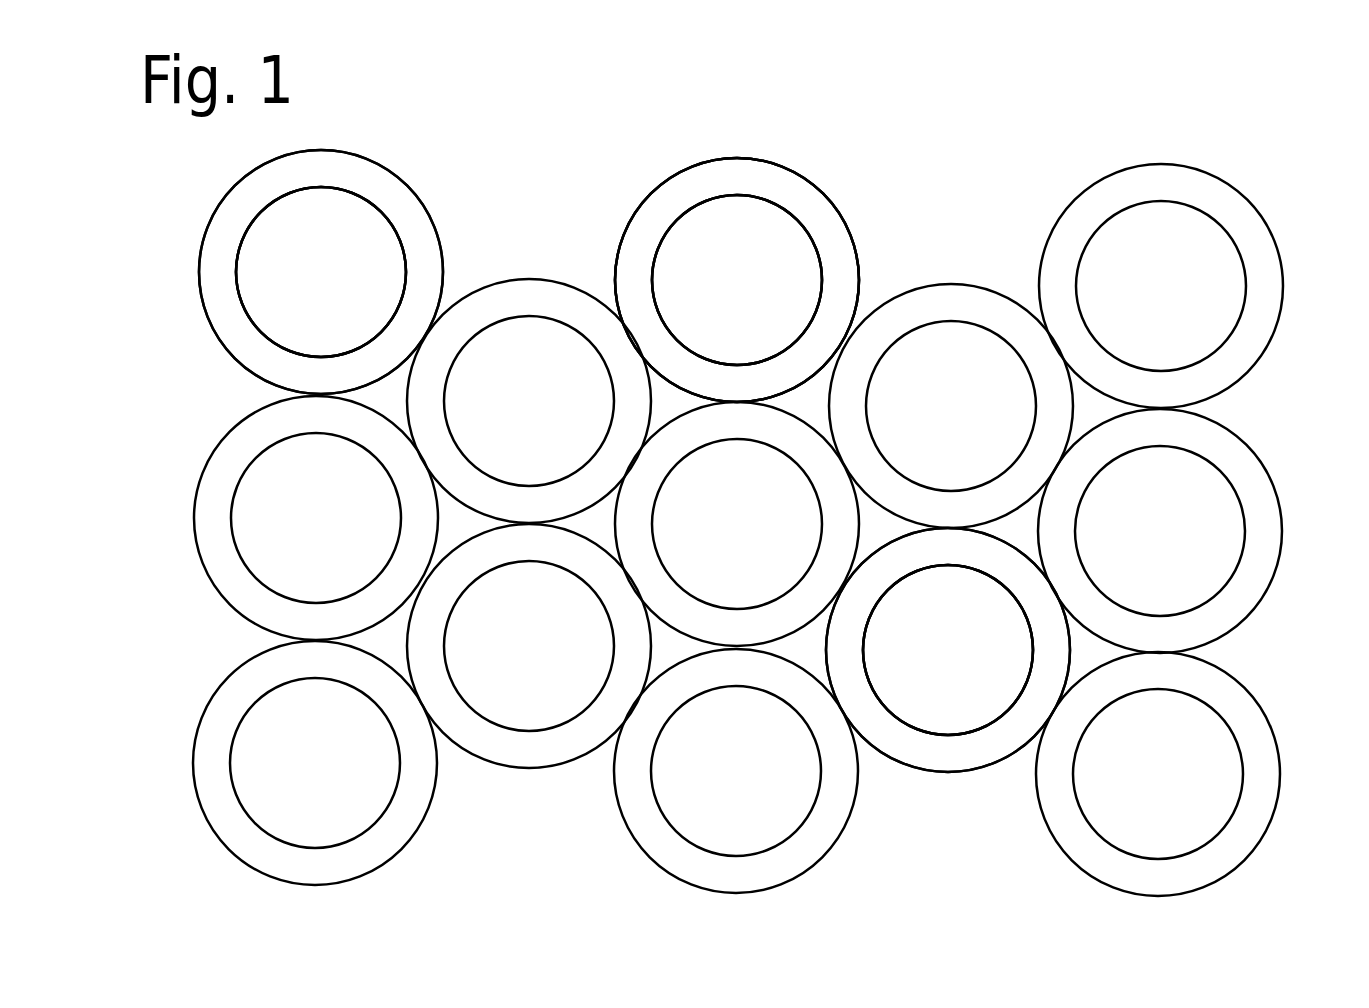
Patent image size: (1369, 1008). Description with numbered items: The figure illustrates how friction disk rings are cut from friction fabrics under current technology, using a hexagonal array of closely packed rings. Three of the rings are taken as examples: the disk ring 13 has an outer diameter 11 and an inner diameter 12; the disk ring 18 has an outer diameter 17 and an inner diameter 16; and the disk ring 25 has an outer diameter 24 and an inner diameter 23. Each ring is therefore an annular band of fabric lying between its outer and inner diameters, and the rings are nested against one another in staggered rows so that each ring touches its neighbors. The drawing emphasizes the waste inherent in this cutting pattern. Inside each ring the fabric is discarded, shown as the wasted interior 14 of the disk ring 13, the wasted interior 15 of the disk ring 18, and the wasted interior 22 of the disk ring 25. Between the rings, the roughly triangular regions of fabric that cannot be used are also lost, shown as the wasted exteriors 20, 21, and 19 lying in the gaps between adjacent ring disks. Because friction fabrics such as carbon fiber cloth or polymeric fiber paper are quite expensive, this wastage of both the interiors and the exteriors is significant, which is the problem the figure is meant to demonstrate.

The outer diameter 11 is at (313, 151).
The inner diameter 12 is at (345, 187).
The disk ring 13 is at (397, 202).
The wasted interior 14 is at (363, 262).
The wasted interior 15 is at (728, 220).
The inner diameter 16 is at (762, 198).
The outer diameter 17 is at (830, 195).
The disk ring 18 is at (823, 233).
The wasted exterior 19 is at (1022, 527).
The wasted exterior 20 is at (603, 518).
The wasted exterior 21 is at (810, 643).
The wasted interior 22 is at (927, 680).
The inner diameter 23 is at (952, 736).
The outer diameter 24 is at (962, 767).
The disk ring 25 is at (997, 737).